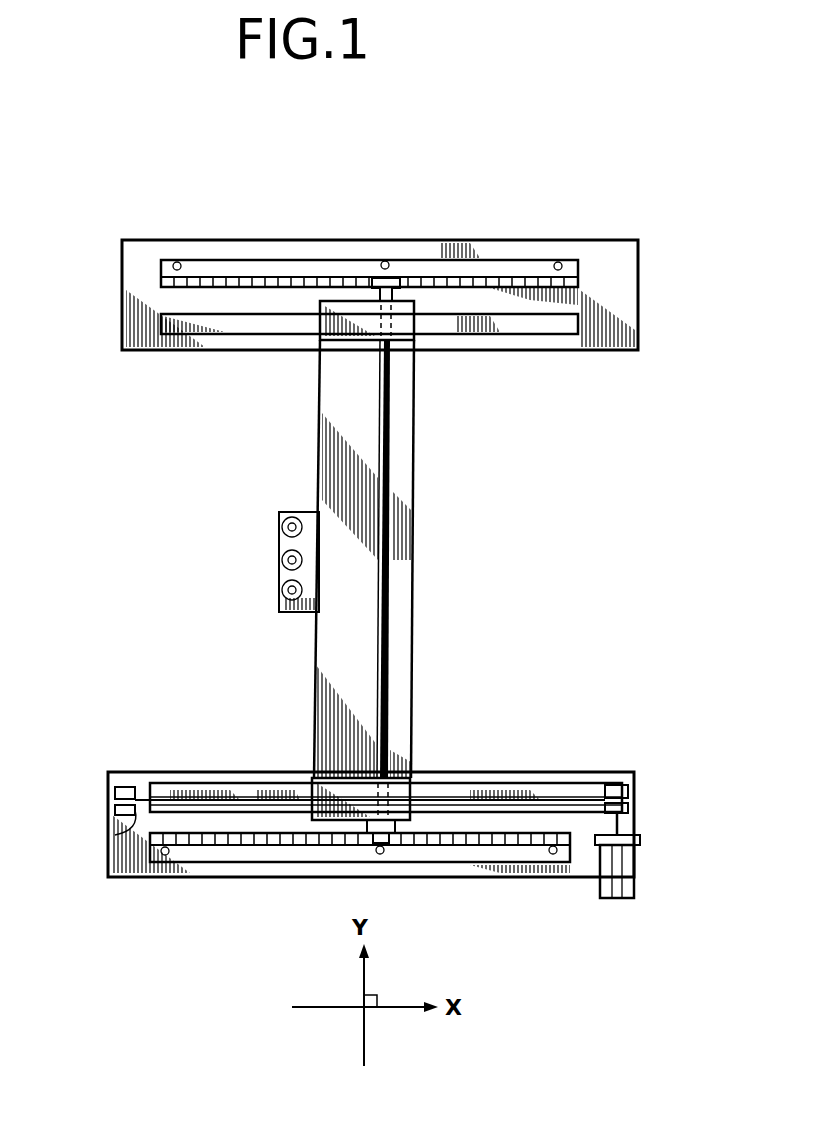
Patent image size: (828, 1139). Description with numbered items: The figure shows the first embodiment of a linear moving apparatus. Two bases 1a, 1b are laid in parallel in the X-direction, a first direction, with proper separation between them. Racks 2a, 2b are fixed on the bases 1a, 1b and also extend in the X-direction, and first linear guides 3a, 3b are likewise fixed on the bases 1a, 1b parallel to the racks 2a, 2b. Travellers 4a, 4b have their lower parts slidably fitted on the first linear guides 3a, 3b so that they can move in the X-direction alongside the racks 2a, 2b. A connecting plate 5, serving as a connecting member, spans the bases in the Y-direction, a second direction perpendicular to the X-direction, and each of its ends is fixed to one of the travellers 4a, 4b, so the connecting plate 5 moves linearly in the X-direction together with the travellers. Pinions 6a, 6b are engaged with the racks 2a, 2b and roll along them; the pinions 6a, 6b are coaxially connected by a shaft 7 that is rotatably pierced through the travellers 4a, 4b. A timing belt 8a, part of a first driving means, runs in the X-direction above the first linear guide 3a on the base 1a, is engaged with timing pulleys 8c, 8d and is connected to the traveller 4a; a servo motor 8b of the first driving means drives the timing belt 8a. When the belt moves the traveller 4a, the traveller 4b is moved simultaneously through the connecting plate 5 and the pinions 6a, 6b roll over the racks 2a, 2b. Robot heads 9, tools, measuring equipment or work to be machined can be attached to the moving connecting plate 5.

The base 1a is at (533, 772).
The base 1b is at (612, 351).
The rack 2a is at (512, 855).
The rack 2b is at (500, 278).
The first linear guide 3a is at (212, 788).
The first linear guide 3b is at (220, 322).
The traveller 4a is at (335, 805).
The traveller 4b is at (348, 318).
The connecting plate 5 is at (415, 592).
The pinion 6a is at (382, 854).
The pinion 6b is at (387, 282).
The shaft 7 is at (395, 458).
The timing belt 8a is at (468, 797).
The servo motor 8b is at (636, 870).
The timing pulley 8c is at (622, 782).
The timing pulley 8d is at (125, 808).
The robot head 9 is at (282, 527).